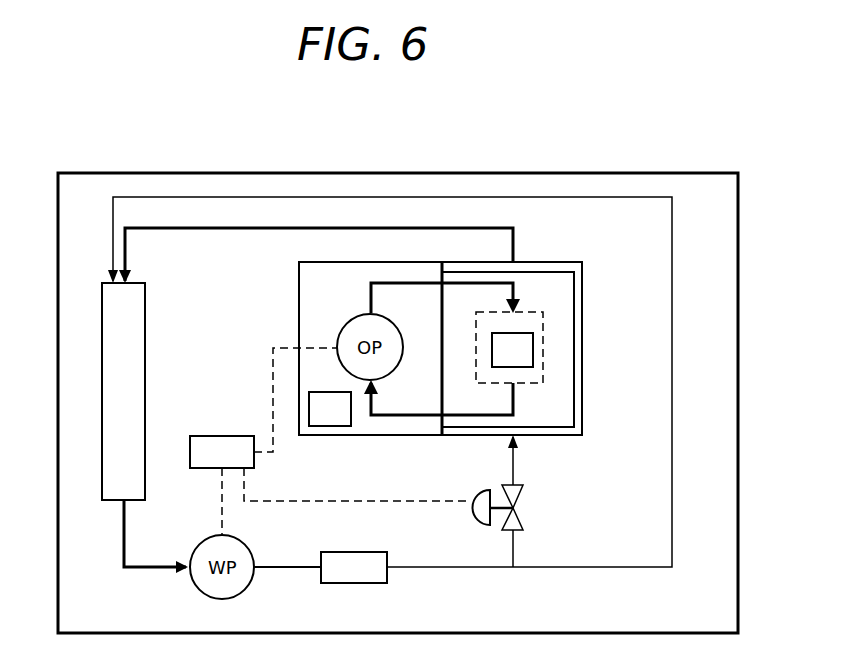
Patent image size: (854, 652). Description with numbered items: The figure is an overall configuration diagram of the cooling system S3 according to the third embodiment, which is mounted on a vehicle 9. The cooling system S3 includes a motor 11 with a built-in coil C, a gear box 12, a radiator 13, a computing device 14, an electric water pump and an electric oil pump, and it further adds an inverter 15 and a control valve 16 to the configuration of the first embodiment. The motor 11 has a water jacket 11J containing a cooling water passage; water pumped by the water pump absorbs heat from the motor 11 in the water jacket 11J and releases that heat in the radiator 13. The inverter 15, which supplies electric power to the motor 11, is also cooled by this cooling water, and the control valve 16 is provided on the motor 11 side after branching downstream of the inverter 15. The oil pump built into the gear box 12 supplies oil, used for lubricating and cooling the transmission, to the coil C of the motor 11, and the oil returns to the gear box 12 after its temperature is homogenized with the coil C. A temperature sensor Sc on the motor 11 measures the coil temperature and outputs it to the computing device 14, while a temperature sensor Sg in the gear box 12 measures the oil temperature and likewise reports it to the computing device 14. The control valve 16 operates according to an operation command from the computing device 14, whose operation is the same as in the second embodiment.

The vehicle 9 is at (483, 173).
The motor 11 is at (540, 262).
The water jacket 11J is at (578, 292).
The gear box 12 is at (299, 284).
The radiator 13 is at (147, 319).
The computing device 14 is at (215, 436).
The inverter 15 is at (388, 583).
The control valve 16 is at (475, 520).
The coil C is at (542, 356).
The temperature sensor Sg is at (340, 426).
The temperature sensor Sc is at (523, 367).
The cooling system S3 is at (674, 587).